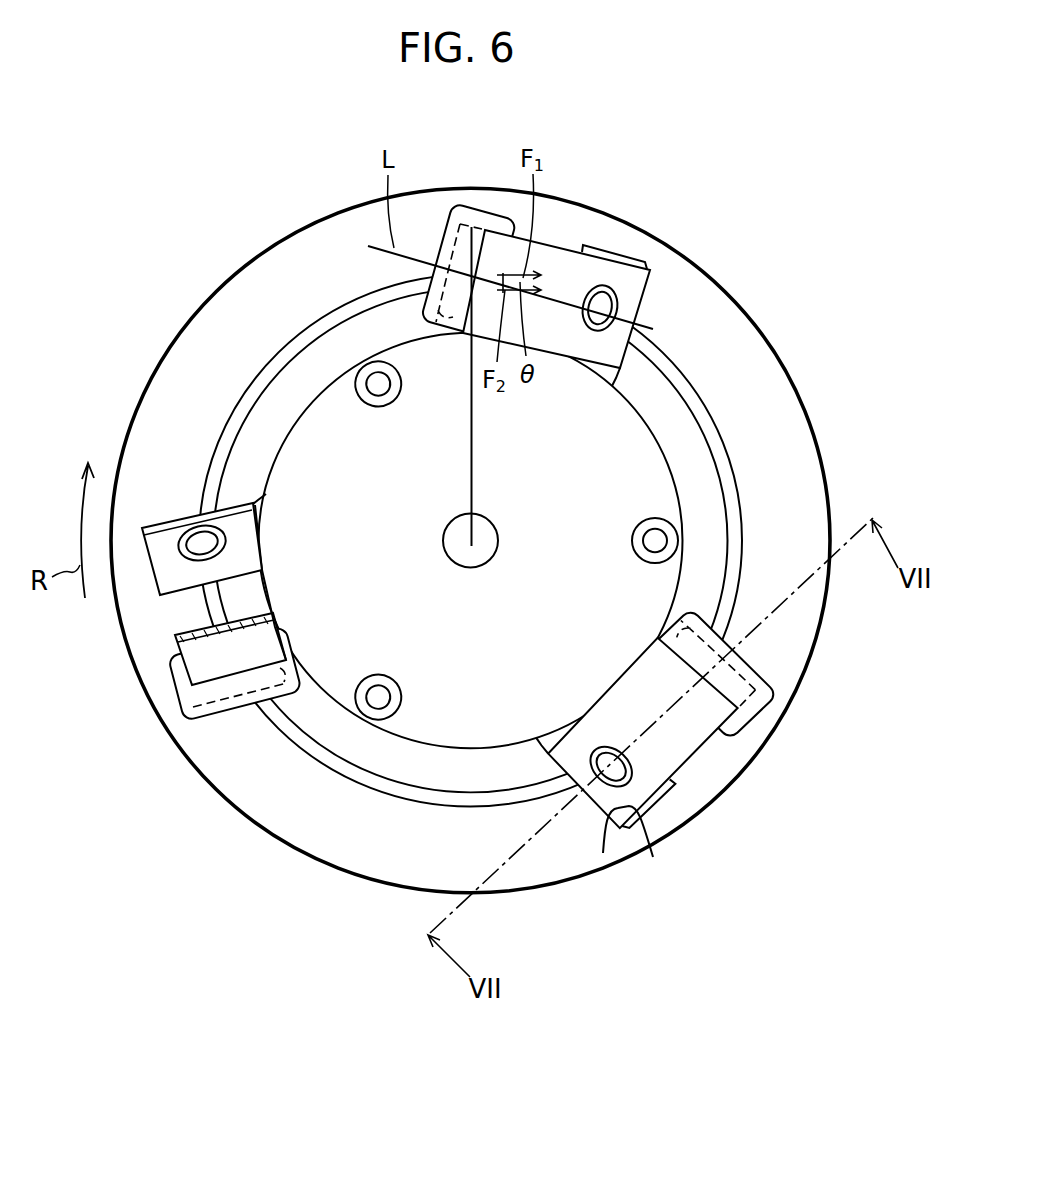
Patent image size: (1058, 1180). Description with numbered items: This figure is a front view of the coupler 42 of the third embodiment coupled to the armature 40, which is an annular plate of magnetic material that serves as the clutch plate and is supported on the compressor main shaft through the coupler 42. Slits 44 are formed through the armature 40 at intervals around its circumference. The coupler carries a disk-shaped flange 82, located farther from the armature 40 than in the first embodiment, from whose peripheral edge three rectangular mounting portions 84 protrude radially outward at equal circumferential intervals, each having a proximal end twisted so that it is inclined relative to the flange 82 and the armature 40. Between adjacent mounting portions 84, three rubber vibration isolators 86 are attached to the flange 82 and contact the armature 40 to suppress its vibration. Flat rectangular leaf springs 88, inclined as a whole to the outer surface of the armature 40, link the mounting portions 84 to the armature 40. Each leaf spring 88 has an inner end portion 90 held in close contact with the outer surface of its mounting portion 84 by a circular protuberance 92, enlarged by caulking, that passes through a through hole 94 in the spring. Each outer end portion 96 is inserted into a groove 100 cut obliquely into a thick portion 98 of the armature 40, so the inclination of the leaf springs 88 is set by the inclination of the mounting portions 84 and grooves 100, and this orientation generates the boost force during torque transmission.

The armature 40 is at (788, 422).
The coupler 42 is at (661, 403).
The slits 44 is at (705, 425).
The flange 82 is at (645, 487).
The mounting portions 84 is at (636, 283).
The rubber vibration isolators 86 is at (371, 368).
The leaf springs 88 is at (548, 253).
The inner end portion 90 is at (652, 282).
The circular protuberance 92 is at (603, 300).
The through hole 94 is at (600, 332).
The outer end portion 96 is at (460, 224).
The thick portion 98 is at (487, 217).
The groove 100 is at (436, 330).